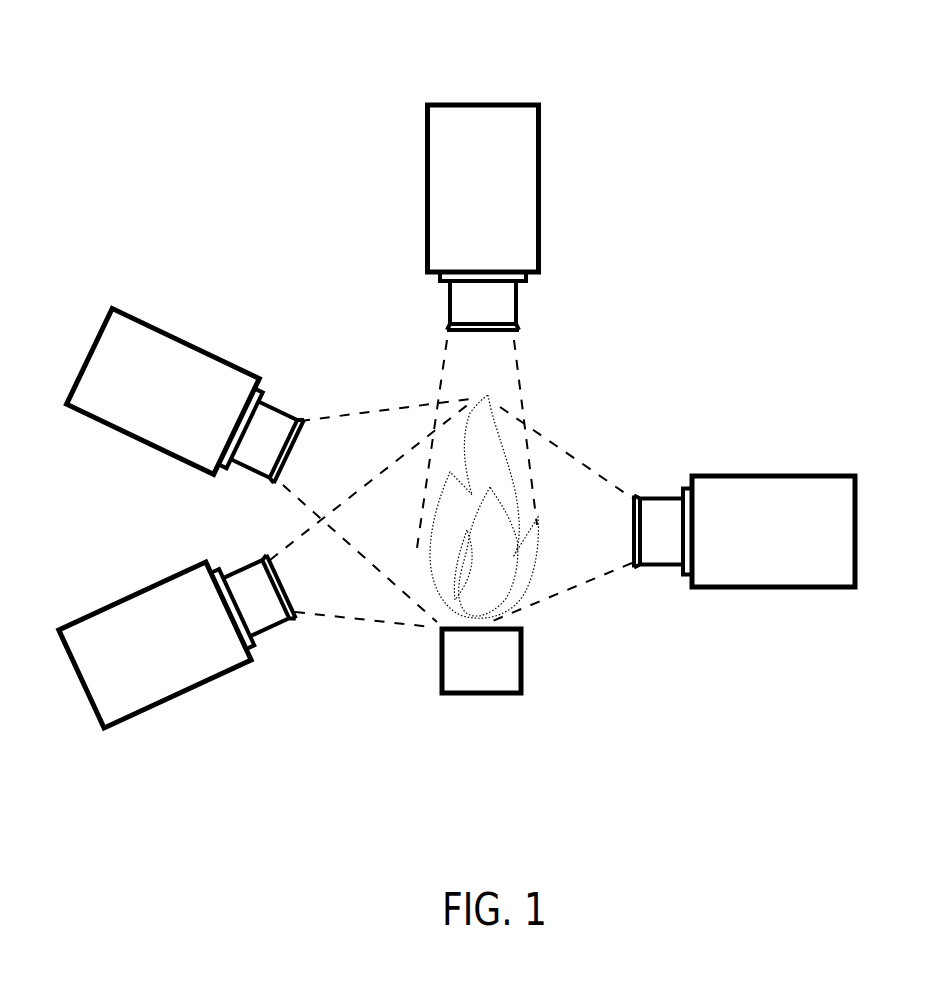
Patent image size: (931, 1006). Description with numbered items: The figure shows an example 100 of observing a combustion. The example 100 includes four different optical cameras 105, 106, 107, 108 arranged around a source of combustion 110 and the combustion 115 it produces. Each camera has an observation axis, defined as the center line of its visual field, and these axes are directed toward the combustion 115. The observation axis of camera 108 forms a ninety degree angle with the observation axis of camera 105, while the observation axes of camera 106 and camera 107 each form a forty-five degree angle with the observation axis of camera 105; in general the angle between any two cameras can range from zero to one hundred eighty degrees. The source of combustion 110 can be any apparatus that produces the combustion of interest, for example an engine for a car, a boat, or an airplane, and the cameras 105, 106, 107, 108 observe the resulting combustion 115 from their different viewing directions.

The example of observing a combustion 100 is at (155, 83).
The optical camera 105 is at (426, 137).
The optical camera 106 is at (101, 330).
The optical camera 107 is at (145, 590).
The optical camera 108 is at (802, 475).
The source of combustion 110 is at (481, 694).
The combustion 115 is at (532, 588).